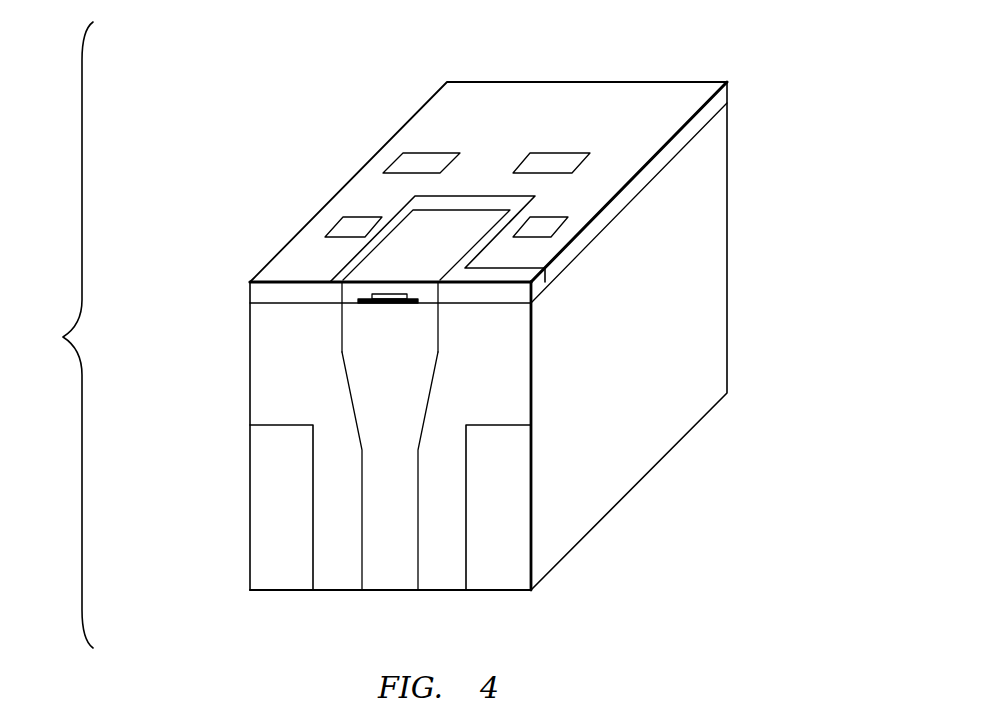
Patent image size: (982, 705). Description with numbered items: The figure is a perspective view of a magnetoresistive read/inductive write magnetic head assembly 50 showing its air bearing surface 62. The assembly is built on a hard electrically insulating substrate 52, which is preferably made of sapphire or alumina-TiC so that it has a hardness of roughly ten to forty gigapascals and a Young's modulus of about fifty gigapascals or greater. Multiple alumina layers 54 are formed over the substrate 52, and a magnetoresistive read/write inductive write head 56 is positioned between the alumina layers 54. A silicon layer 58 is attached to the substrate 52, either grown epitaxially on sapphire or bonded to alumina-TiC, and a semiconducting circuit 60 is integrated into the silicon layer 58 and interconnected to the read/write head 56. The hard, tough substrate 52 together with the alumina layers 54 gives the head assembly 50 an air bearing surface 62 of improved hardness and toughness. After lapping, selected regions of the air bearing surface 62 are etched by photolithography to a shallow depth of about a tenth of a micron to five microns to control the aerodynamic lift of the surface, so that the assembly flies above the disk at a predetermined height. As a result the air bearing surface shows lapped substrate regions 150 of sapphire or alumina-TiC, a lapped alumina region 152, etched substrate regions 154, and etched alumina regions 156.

The magnetoresistive read/inductive write magnetic head assembly 50 is at (57, 335).
The hard electrically insulating substrate 52 is at (698, 322).
The multiple alumina layers 54 is at (352, 288).
The magnetoresistive read/write inductive write head 56 is at (365, 298).
The silicon layer 58 is at (700, 122).
The semiconducting circuit 60 is at (540, 227).
The air bearing surface 62 is at (218, 467).
The lapped substrate regions 150 is at (267, 565).
The lapped alumina region 152 is at (345, 305).
The etched substrate regions 154 is at (273, 402).
The etched alumina regions 156 is at (270, 293).